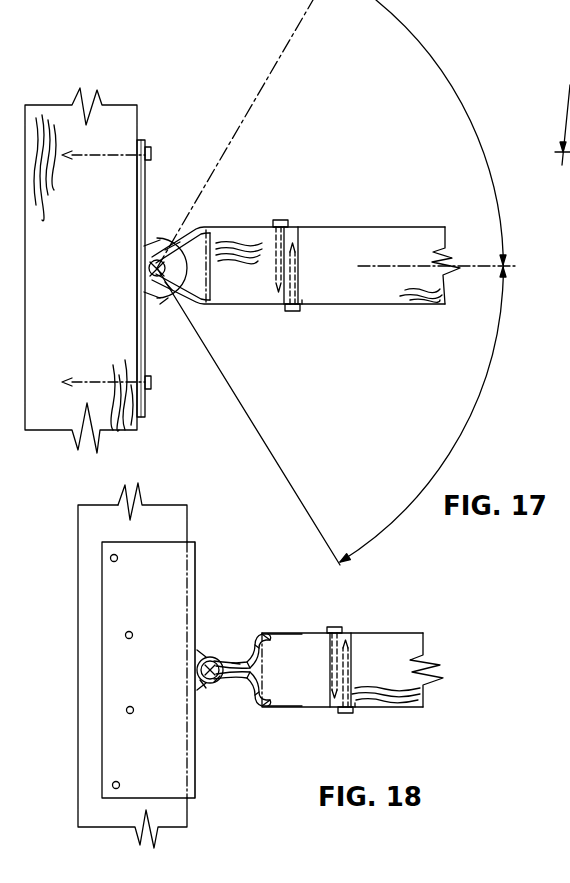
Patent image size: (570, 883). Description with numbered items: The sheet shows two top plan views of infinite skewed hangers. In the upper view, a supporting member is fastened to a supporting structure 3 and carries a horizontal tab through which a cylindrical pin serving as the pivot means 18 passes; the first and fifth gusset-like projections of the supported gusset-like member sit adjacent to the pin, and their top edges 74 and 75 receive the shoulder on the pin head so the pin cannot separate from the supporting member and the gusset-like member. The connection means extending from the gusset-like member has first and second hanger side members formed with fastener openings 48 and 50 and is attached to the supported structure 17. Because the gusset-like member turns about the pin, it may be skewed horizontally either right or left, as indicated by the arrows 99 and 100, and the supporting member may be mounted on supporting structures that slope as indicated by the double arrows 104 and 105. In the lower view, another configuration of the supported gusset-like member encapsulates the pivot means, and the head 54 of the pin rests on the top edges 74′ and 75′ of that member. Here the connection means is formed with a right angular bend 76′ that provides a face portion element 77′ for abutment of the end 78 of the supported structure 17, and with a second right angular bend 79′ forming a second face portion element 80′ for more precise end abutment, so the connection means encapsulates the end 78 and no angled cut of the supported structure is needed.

In FIG. 17, the supporting structure 3 is at (152, 422).
In FIG. 18, the supporting structure 3 is at (74, 796).
In FIG. 17, the pivot means (pin) 18 is at (147, 272).
In FIG. 18, the pivot means (pin) 18 is at (207, 682).
In FIG. 17, the top edge 75 is at (148, 264).
In FIG. 17, the top edge 74 is at (152, 284).
In FIG. 17, the supported structure 17 is at (372, 228).
In FIG. 18, the supported structure 17 is at (408, 633).
In FIG. 17, the fastener openings 50 is at (280, 220).
In FIG. 18, the fastener openings 50 is at (326, 636).
In FIG. 17, the fastener openings 48 is at (283, 311).
In FIG. 18, the fastener openings 48 is at (335, 702).
In FIG. 17, the arrow 99 is at (448, 75).
In FIG. 17, the arrow 100 is at (475, 403).
In FIG. 17, the double arrow 104 is at (569, 93).
In FIG. 17, the double arrow 105 is at (569, 167).
In FIG. 18, the top edge 75′ is at (204, 658).
In FIG. 18, the head 54 is at (198, 677).
In FIG. 18, the top edge 74′ is at (207, 684).
In FIG. 18, the second right angular bend 79′ is at (262, 630).
In FIG. 18, the second face portion element 80′ is at (265, 633).
In FIG. 18, the end 78 is at (252, 668).
In FIG. 18, the right angular bend 76′ is at (258, 712).
In FIG. 18, the face portion element 77′ is at (296, 700).